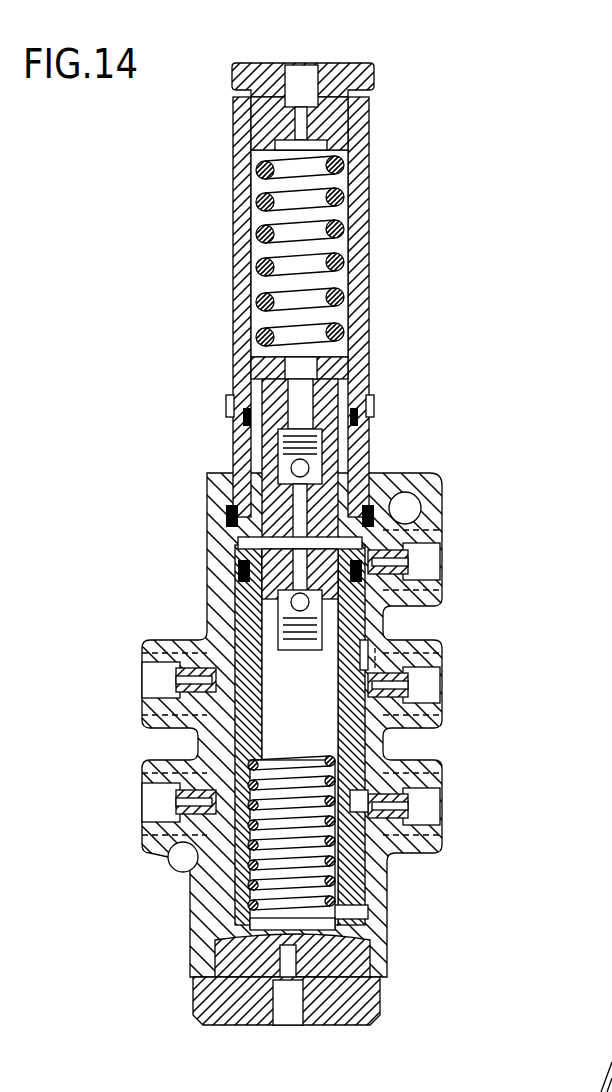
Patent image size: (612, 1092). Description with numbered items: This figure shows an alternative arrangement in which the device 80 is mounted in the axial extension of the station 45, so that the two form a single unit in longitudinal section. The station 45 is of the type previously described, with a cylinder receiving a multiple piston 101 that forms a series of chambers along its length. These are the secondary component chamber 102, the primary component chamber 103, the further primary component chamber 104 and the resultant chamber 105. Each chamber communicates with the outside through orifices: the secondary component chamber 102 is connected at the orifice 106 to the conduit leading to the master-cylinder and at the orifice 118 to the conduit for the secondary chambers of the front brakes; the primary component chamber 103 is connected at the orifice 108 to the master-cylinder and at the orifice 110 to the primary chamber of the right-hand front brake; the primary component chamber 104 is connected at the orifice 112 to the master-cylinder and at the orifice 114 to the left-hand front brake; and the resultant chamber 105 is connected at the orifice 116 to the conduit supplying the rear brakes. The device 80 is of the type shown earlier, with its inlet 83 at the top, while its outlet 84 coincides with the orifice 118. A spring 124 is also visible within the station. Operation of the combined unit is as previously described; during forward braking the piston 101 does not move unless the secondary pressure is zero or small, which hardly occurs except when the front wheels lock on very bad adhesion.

The station 45 is at (387, 942).
The device 80 is at (367, 224).
The inlet 83 is at (313, 64).
The outlet 84 is at (262, 520).
The multiple piston 101 is at (248, 732).
The secondary component chamber 102 is at (345, 553).
The primary component chamber 103 is at (367, 657).
The primary component chamber 104 is at (355, 800).
The resultant chamber 105 is at (330, 910).
The orifice 106 is at (440, 566).
The orifice 108 is at (440, 693).
The orifice 110 is at (142, 681).
The orifice 112 is at (440, 809).
The orifice 114 is at (142, 804).
The orifice 116 is at (285, 1027).
The orifice 118 is at (262, 528).
The spring 124 is at (253, 890).